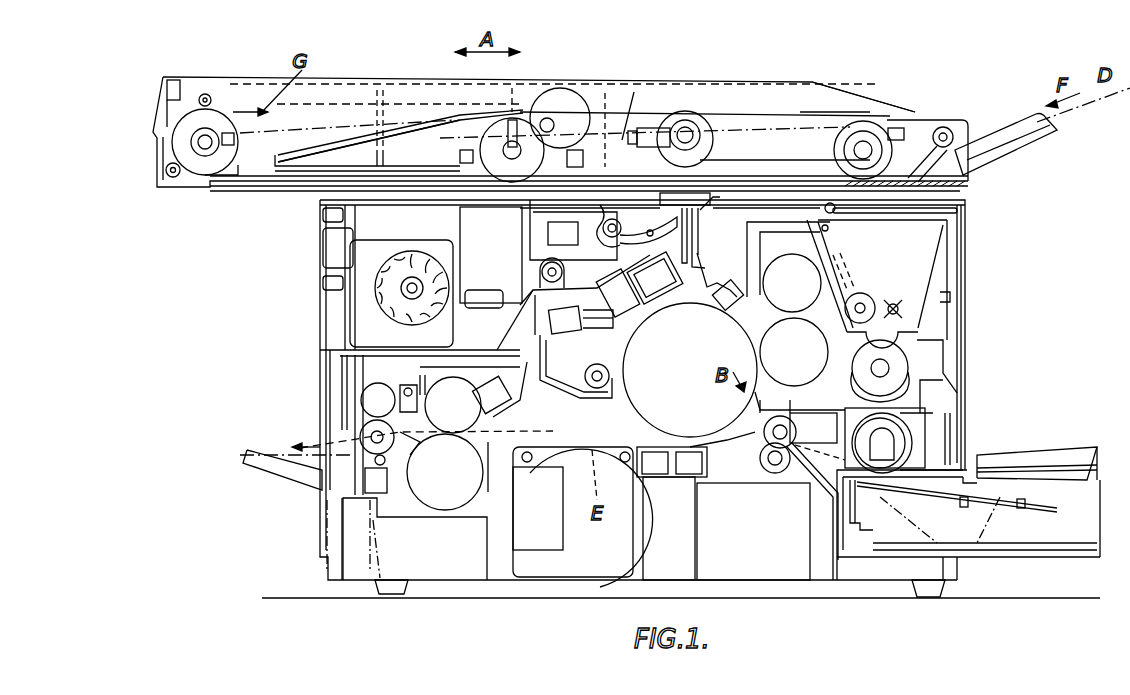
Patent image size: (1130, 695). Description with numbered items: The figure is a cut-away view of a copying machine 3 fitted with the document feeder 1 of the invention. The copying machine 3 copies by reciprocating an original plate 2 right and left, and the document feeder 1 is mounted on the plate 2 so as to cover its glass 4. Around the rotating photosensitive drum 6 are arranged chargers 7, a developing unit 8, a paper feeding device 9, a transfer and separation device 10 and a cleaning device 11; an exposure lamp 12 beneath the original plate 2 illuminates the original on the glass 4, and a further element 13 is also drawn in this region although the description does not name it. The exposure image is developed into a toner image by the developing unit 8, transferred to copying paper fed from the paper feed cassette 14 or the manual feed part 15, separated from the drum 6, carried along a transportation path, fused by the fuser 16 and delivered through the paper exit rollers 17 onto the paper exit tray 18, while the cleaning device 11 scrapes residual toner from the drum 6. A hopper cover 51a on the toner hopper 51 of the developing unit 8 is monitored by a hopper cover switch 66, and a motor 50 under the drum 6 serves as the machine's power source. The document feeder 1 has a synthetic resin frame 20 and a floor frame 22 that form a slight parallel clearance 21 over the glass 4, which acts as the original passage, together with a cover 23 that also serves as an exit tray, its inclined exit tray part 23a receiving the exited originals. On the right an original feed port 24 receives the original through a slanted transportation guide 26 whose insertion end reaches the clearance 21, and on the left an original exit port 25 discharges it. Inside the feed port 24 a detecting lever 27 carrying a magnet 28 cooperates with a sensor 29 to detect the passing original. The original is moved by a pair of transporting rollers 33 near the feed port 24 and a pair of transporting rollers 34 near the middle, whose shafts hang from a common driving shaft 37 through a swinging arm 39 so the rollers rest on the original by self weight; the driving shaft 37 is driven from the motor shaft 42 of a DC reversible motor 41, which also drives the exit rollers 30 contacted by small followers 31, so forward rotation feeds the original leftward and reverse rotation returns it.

The document feeder 1 is at (770, 80).
The original plate 2 is at (262, 198).
The copying machine 3 is at (975, 310).
The glass 4 is at (963, 186).
The photosensitive drum 6 is at (680, 399).
The chargers 7 is at (668, 292).
The developing unit 8 is at (755, 335).
The paper feeding device 9 is at (796, 480).
The transfer and separation device 10 is at (684, 480).
The cleaning device 11 is at (610, 377).
The exposure lamp 12 is at (612, 250).
The exposure slit 13 is at (698, 230).
The paper feed cassette 14 is at (1060, 560).
The manual feed part 15 is at (1030, 458).
The fuser 16 is at (447, 502).
The paper exit rollers 17 is at (360, 413).
The paper exit tray 18 is at (298, 487).
The frame 20 is at (878, 112).
The parallel clearance 21 is at (412, 188).
The floor frame 22 is at (306, 188).
The cover 23 is at (740, 110).
The inclined exit tray part 23a is at (432, 122).
The original feed port 24 is at (992, 130).
The original exit port 25 is at (222, 148).
The transportation guide 26 is at (1060, 130).
The detecting lever 27 is at (947, 128).
The magnet 28 is at (903, 130).
The sensor 29 is at (845, 148).
The exit rollers 30 is at (215, 135).
The followers 31 is at (210, 96).
The transporting rollers 33 is at (848, 128).
The transporting rollers 34 is at (498, 132).
The driving shaft 37 is at (686, 120).
The swinging arm 39 is at (634, 92).
The DC reversible motor 41 is at (594, 92).
The motor shaft 42 is at (547, 118).
The motor 50 is at (592, 558).
The toner hopper 51 is at (910, 258).
The hopper cover 51a is at (928, 216).
The hopper cover switch 66 is at (838, 254).